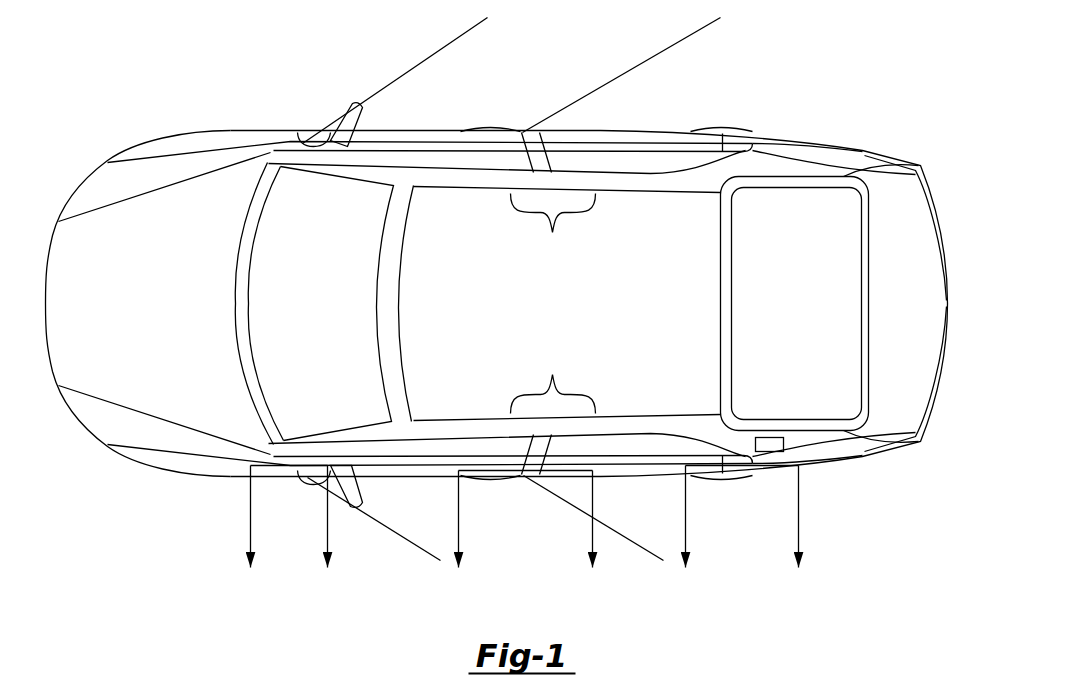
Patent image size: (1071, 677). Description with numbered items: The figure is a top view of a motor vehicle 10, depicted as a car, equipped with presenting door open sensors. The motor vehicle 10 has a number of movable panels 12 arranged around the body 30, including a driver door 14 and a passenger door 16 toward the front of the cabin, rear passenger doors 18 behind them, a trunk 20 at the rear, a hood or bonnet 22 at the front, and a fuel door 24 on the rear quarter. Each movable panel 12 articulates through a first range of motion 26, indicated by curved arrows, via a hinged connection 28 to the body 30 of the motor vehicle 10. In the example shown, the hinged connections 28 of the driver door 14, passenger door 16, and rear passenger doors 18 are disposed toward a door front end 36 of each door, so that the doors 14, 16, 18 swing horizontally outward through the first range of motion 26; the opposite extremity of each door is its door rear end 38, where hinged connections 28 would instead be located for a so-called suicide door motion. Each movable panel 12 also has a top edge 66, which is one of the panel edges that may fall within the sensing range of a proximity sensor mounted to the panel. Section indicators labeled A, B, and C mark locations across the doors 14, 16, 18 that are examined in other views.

The motor vehicle 10 is at (836, 70).
The movable panel 12 is at (193, 183).
The driver door 14 is at (438, 450).
The passenger door 16 is at (477, 157).
The rear passenger doors 18 is at (652, 160).
The trunk 20 is at (898, 312).
The hood 22 is at (131, 312).
The fuel door 24 is at (785, 442).
The first range of motion 26 is at (517, 125).
The hinged connection 28 is at (307, 140).
The body 30 is at (190, 462).
The door front end 36 is at (327, 130).
The door rear end 38 is at (485, 130).
The top edge 66 is at (553, 304).